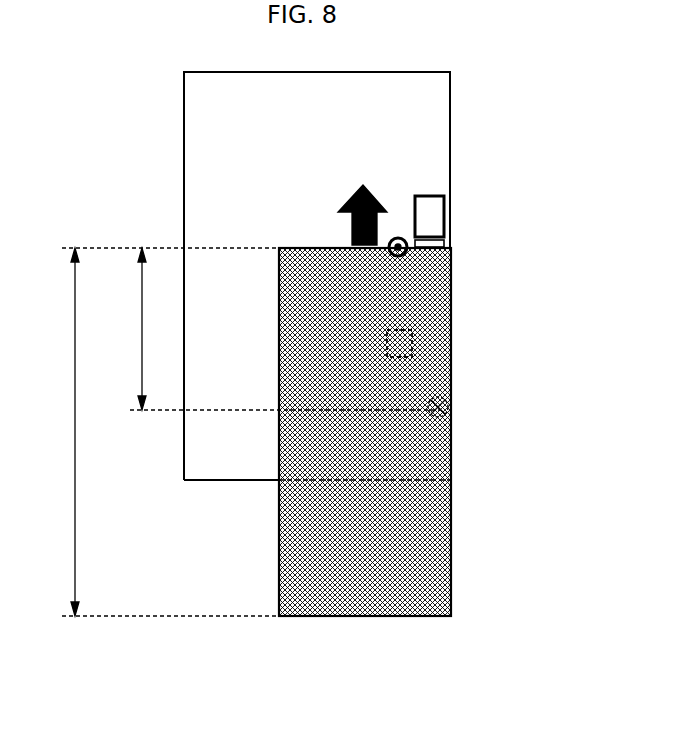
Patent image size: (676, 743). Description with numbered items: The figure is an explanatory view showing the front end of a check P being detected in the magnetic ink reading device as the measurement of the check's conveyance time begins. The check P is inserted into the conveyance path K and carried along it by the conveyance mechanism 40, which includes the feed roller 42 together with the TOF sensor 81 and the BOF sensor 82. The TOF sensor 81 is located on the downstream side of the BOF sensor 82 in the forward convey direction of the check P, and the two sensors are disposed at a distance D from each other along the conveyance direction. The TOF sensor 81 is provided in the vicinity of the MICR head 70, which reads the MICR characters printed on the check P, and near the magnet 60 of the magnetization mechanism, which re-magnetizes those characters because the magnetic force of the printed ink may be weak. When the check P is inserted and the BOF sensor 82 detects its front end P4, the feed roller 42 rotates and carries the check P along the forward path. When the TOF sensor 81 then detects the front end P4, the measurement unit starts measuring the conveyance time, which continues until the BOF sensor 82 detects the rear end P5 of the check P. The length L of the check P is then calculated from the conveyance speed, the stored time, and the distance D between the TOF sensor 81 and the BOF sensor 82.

The conveyance path K is at (184, 160).
The check P is at (442, 543).
The front end P4 is at (314, 247).
The rear end P5 is at (318, 618).
The length L is at (65, 432).
The distance D is at (131, 329).
The MICR head 70 is at (446, 209).
The magnet 60 is at (446, 243).
The TOF sensor 81 is at (402, 256).
The BOF sensor 82 is at (441, 418).
The conveyance mechanism 40 is at (413, 343).
The feed roller 42 is at (399, 343).